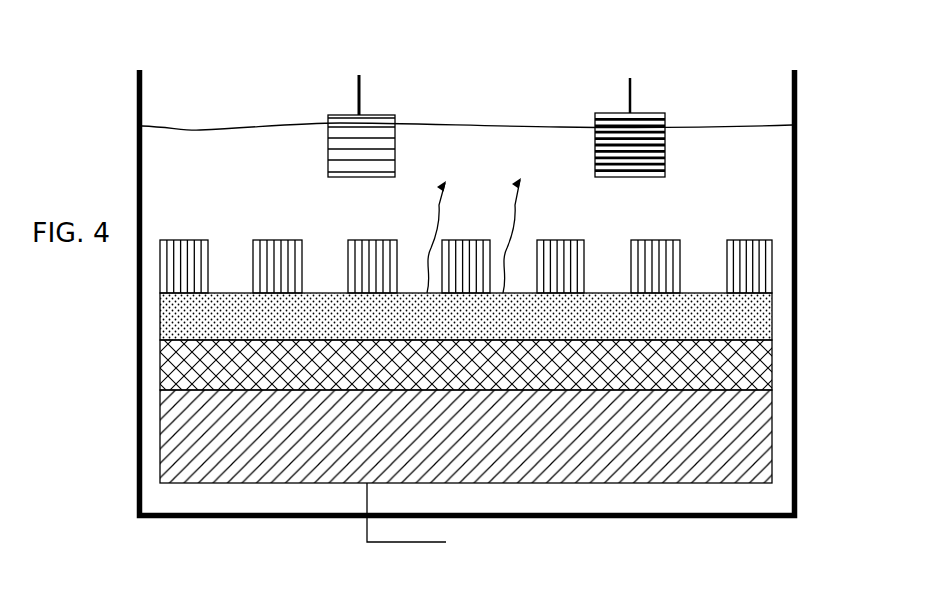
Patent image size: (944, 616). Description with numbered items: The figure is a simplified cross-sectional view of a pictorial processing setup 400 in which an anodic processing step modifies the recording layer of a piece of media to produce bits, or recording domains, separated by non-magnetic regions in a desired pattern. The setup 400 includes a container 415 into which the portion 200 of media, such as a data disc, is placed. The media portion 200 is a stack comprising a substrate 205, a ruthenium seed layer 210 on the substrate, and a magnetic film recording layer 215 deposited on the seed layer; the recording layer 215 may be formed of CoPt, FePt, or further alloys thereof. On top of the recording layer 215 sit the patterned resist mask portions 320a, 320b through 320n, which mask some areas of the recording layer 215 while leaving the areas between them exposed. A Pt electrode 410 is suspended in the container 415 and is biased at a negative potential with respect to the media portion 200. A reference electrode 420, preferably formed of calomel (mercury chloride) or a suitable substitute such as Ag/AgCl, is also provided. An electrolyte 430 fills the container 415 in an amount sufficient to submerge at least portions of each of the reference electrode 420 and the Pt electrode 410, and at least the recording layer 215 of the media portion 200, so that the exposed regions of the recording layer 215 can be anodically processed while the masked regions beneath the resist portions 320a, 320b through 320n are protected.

The processing setup 400 is at (716, 100).
The Pt electrode 410 is at (597, 125).
The container 415 is at (270, 518).
The reference electrode 420 is at (412, 102).
The electrolyte 430 is at (198, 128).
The portion of media 200 is at (772, 371).
The substrate 205 is at (160, 458).
The ruthenium seed layer 210 is at (160, 367).
The magnetic film recording layer 215 is at (160, 328).
The resist mask portion 320a is at (175, 240).
The resist mask portion 320b is at (272, 240).
The resist mask portion 320n is at (725, 240).